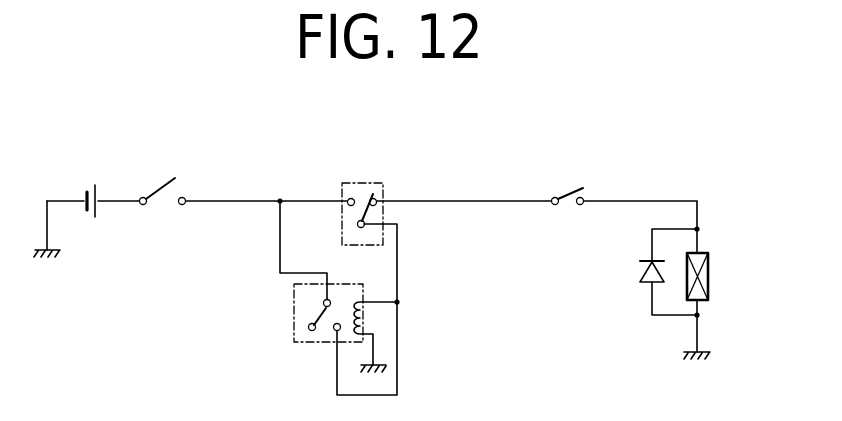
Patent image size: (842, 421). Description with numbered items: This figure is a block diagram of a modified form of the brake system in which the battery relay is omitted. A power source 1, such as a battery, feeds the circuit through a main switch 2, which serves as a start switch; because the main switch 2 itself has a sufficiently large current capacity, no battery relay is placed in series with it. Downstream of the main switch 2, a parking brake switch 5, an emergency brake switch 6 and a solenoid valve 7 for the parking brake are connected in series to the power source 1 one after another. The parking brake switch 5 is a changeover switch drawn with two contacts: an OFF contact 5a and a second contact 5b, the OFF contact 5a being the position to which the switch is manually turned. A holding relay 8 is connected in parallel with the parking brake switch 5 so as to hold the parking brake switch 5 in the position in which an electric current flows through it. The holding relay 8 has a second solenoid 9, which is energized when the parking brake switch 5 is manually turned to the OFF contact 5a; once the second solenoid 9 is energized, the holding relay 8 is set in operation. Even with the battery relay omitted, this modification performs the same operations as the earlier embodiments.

The power source 1 is at (88, 178).
The main switch 2 is at (163, 208).
The parking brake switch 5 is at (358, 183).
The OFF contact 5a is at (345, 198).
The ON contact of changeover switch 5b is at (379, 198).
The emergency brake switch 6 is at (569, 208).
The solenoid valve 7 is at (712, 268).
The holding relay 8 is at (311, 347).
The second solenoid 9 is at (354, 316).